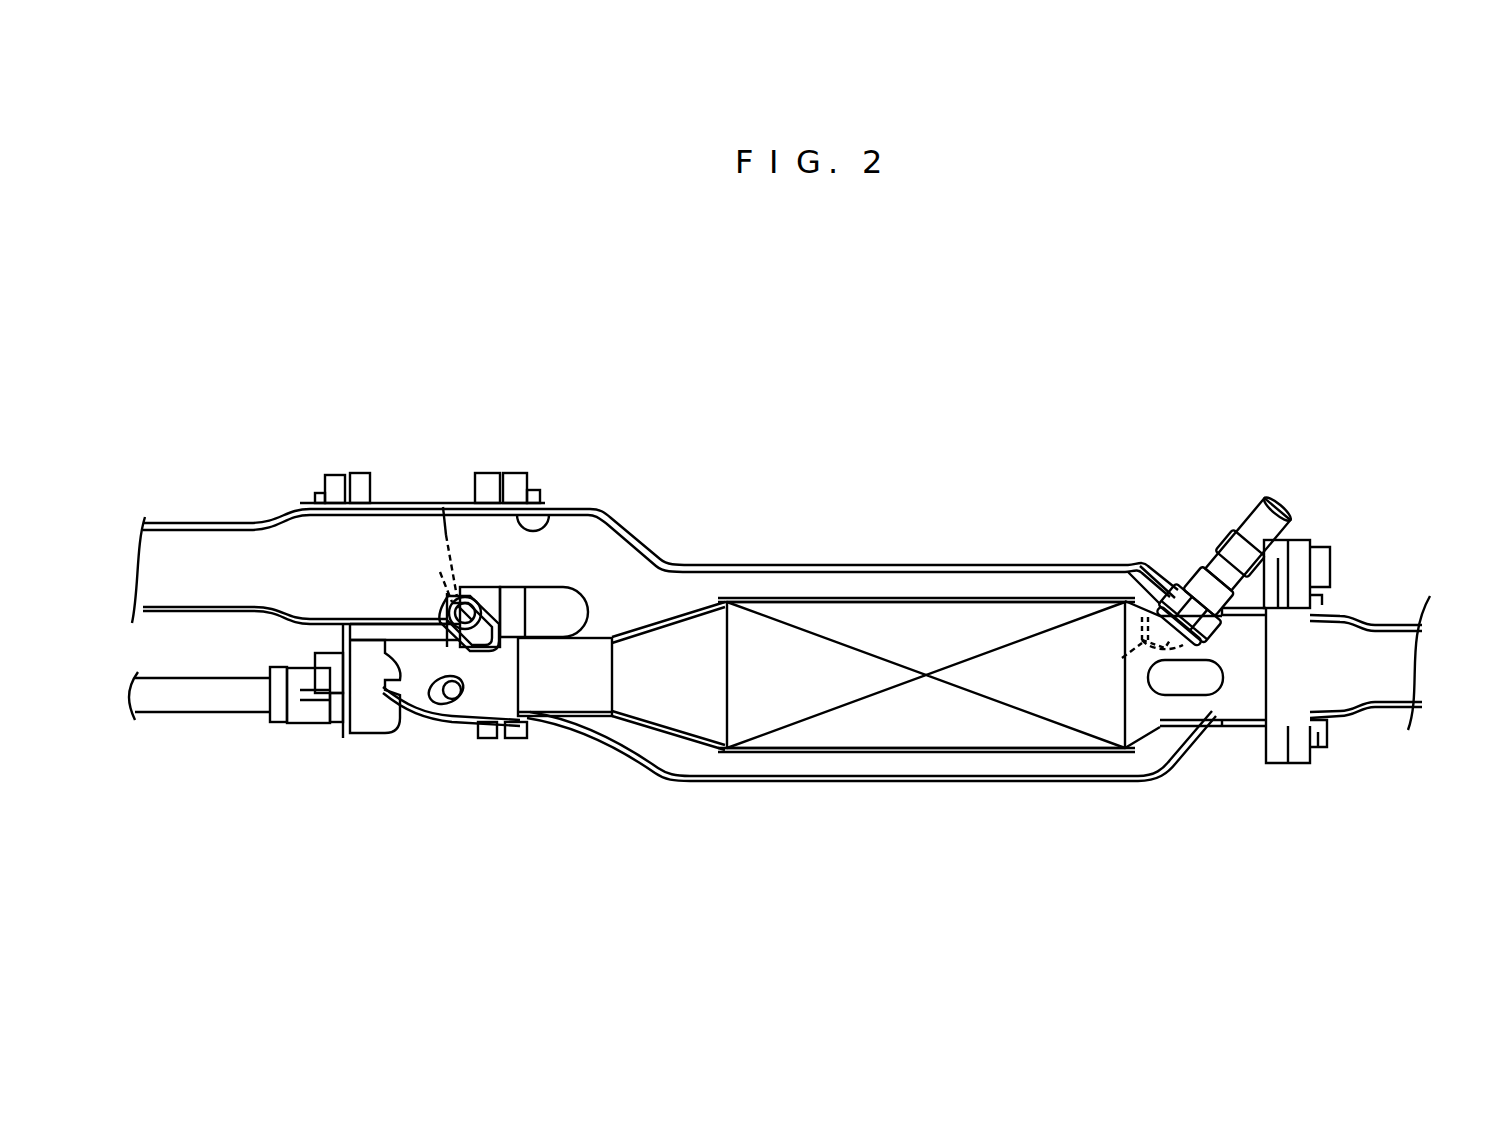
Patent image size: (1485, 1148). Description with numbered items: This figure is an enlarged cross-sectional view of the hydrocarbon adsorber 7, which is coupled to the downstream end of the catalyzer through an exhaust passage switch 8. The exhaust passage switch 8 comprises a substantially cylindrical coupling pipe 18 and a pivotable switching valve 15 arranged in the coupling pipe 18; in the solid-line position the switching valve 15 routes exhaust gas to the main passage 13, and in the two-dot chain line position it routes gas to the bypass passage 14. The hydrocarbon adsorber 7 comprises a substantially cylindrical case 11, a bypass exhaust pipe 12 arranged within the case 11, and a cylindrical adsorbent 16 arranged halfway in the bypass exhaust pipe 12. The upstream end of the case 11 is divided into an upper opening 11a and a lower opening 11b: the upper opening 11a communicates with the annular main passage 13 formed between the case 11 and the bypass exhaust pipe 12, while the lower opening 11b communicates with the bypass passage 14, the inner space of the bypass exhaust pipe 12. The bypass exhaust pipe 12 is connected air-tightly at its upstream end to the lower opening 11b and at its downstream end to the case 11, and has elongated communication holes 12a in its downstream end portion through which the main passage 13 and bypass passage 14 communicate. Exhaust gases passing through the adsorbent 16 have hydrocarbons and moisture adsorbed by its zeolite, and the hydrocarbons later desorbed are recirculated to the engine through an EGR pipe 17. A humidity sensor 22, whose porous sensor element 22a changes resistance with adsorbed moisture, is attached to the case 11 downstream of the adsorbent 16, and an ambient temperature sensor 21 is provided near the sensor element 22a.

The hydrocarbon adsorber 7 is at (882, 390).
The exhaust passage switch 8 is at (447, 394).
The case 11 is at (958, 565).
The upper opening 11a is at (548, 518).
The lower opening 11b is at (505, 722).
The bypass exhaust pipe 12 is at (650, 728).
The communication holes 12a is at (1188, 692).
The main passage 13 is at (910, 659).
The bypass passage 14 is at (602, 677).
The switching valve 15 is at (440, 572).
The adsorbent 16 is at (950, 742).
The EGR pipe 17 is at (203, 714).
The coupling pipe 18 is at (420, 500).
The ambient temperature sensor 21 is at (1127, 595).
The humidity sensor 22 is at (1246, 498).
The sensor element 22a is at (1125, 655).